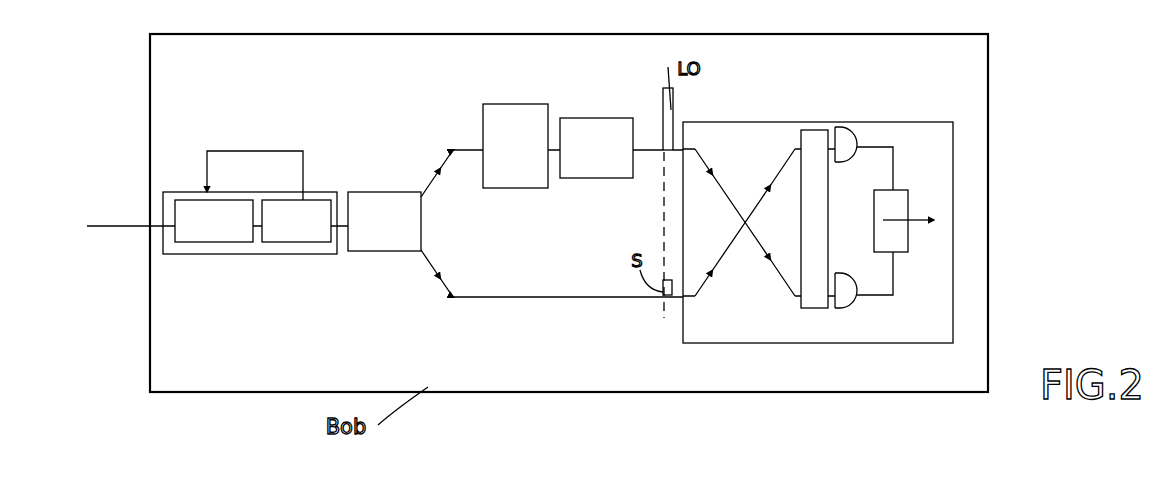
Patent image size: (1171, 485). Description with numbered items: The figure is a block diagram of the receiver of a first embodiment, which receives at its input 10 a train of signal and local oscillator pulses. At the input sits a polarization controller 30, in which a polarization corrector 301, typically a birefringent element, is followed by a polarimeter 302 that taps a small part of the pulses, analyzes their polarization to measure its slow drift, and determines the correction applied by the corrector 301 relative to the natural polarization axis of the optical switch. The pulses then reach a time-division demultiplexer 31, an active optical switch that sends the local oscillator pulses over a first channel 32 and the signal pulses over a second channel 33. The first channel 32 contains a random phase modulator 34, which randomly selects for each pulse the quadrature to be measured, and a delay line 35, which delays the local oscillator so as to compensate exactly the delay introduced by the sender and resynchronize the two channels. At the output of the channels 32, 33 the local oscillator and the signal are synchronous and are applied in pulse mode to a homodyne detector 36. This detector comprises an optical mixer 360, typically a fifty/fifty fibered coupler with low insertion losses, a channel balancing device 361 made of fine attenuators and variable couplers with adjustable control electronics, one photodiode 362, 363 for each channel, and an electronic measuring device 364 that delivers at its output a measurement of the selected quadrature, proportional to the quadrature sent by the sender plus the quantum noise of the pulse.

The input optical signal 10 is at (97, 220).
The polarization controller 30 is at (322, 190).
The polarization corrector 301 is at (205, 238).
The polarimeter 302 is at (288, 238).
The time-division demultiplexer 31 is at (386, 252).
The first channel 32 is at (465, 146).
The second channel 33 is at (498, 298).
The random phase modulator 34 is at (530, 115).
The delay line 35 is at (613, 122).
The homodyne detector 36 is at (732, 333).
The optical mixer 360 is at (747, 162).
The channel balancing device 361 is at (817, 295).
The photodiode 362 is at (847, 132).
The photodiode 363 is at (848, 298).
The electronic measuring device 364 is at (900, 200).